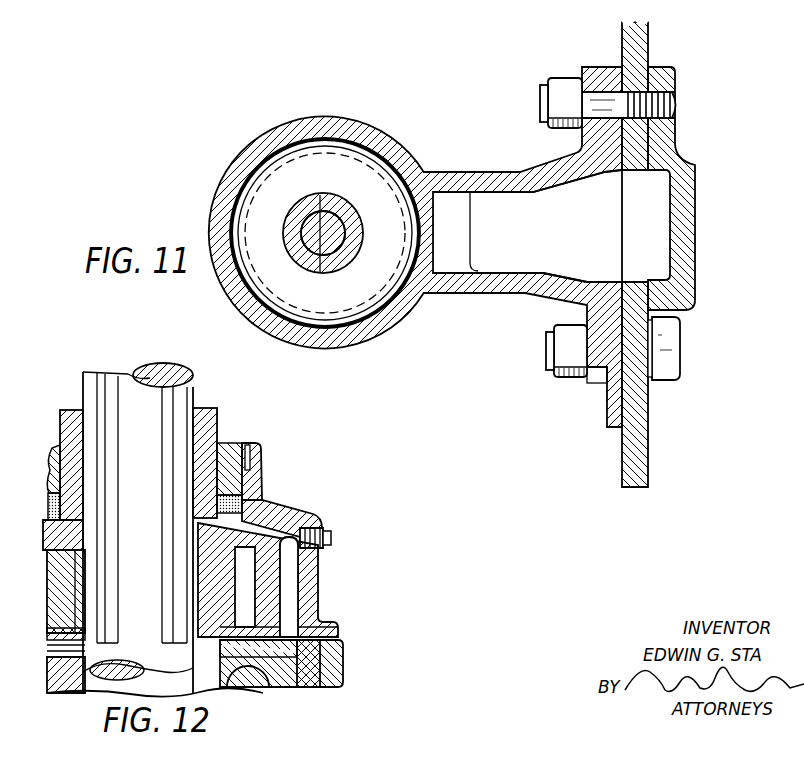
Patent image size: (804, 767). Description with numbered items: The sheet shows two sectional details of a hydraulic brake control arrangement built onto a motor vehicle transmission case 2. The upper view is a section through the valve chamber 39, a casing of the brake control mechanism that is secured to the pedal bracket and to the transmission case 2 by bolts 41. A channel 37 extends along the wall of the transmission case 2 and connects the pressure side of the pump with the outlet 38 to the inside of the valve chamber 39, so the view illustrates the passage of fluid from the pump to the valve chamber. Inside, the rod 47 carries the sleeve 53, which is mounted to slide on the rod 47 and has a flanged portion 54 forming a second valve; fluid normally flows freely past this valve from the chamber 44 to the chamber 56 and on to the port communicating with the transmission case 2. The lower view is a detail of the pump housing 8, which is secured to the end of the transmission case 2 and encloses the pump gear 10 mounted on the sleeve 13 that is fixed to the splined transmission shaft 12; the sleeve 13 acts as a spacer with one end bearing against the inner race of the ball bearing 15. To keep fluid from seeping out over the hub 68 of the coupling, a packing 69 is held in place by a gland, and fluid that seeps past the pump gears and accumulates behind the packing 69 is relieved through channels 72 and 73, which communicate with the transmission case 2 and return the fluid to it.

In FIG. 11, the transmission case 2 is at (666, 253).
In FIG. 12, the transmission case 2 is at (340, 667).
In FIG. 12, the pump housing 8 is at (261, 503).
In FIG. 12, the pump gear 10 is at (248, 598).
In FIG. 12, the transmission shaft 12 is at (180, 392).
In FIG. 12, the sleeve 13 is at (195, 595).
In FIG. 12, the ball bearing 15 is at (291, 678).
In FIG. 11, the channel 37 is at (641, 225).
In FIG. 11, the outlet 38 is at (527, 226).
In FIG. 11, the valve chamber 39 is at (286, 127).
In FIG. 11, the bolts 41 is at (560, 100).
In FIG. 11, the chamber 44 is at (455, 239).
In FIG. 11, the rod 47 is at (320, 272).
In FIG. 11, the sleeve 53 is at (320, 194).
In FIG. 11, the flanged portion 54 is at (325, 233).
In FIG. 11, the chamber 56 is at (357, 150).
In FIG. 12, the hub 68 is at (208, 426).
In FIG. 12, the packing 69 is at (262, 478).
In FIG. 12, the channel 72 is at (292, 519).
In FIG. 12, the channel 73 is at (290, 568).